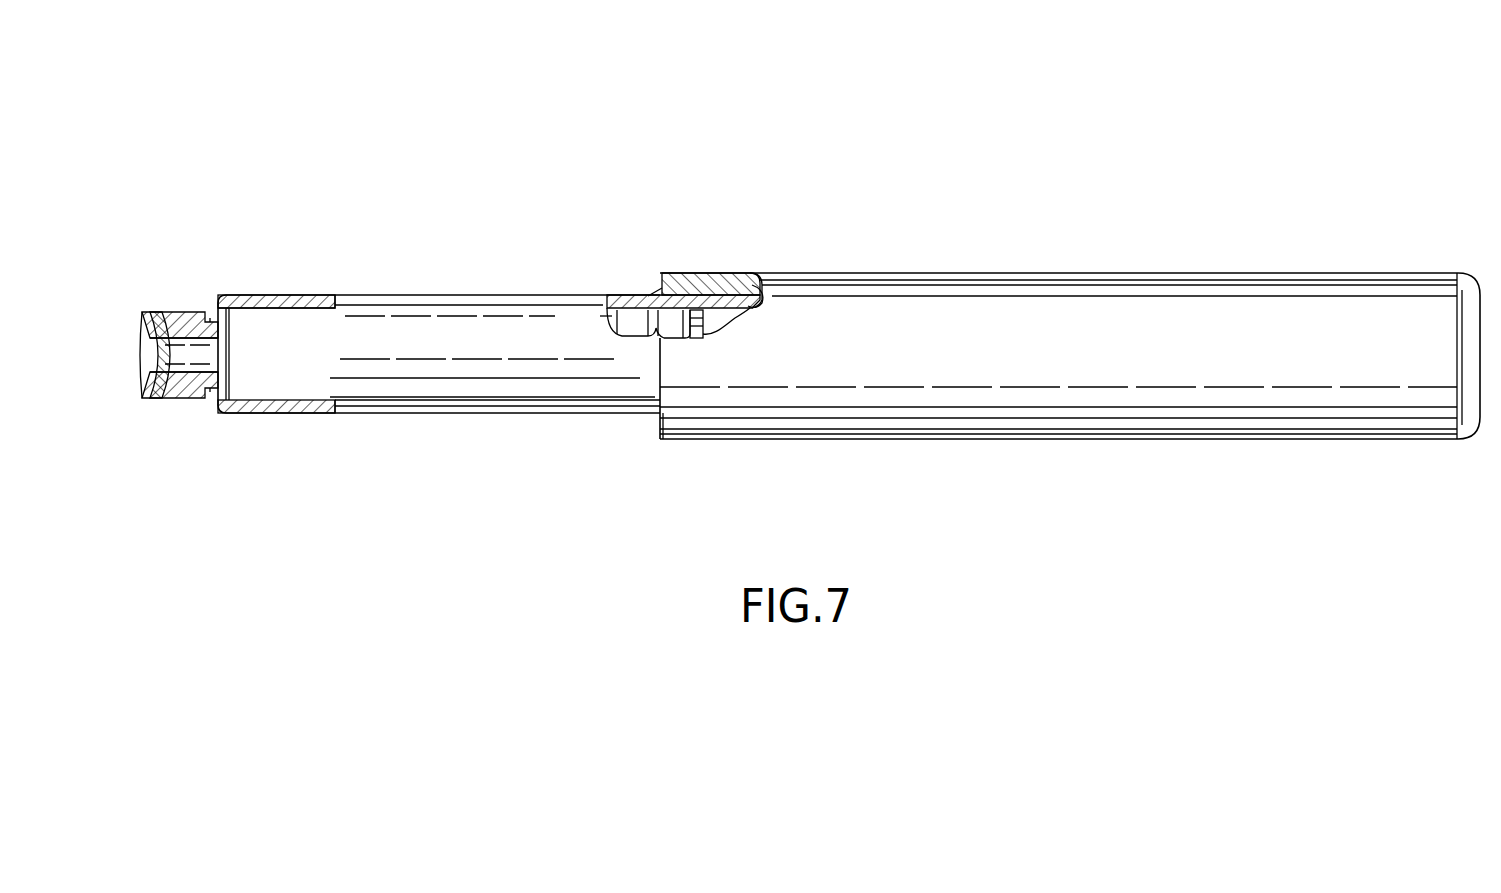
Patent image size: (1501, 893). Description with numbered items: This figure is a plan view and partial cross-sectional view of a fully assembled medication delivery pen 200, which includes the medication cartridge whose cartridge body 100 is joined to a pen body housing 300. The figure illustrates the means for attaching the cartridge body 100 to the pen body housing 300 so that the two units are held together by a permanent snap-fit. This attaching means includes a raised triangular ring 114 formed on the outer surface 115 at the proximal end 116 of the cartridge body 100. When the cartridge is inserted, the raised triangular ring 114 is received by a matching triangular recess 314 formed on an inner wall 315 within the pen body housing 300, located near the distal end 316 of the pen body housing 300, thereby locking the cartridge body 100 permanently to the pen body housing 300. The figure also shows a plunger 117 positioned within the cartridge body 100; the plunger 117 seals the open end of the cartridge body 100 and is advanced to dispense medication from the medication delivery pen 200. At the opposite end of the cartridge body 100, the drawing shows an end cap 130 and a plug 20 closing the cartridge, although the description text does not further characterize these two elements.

The plug 20 is at (164, 403).
The cartridge body 100 is at (518, 420).
The raised triangular ring 114 is at (688, 272).
The outer surface 115 is at (742, 272).
The proximal end 116 is at (748, 310).
The plunger 117 is at (625, 293).
The end cap 130 is at (182, 300).
The medication delivery pen 200 is at (962, 135).
The pen body housing 300 is at (1040, 268).
The triangular recess 314 is at (720, 272).
The inner wall 315 is at (758, 300).
The distal end 316 is at (650, 420).